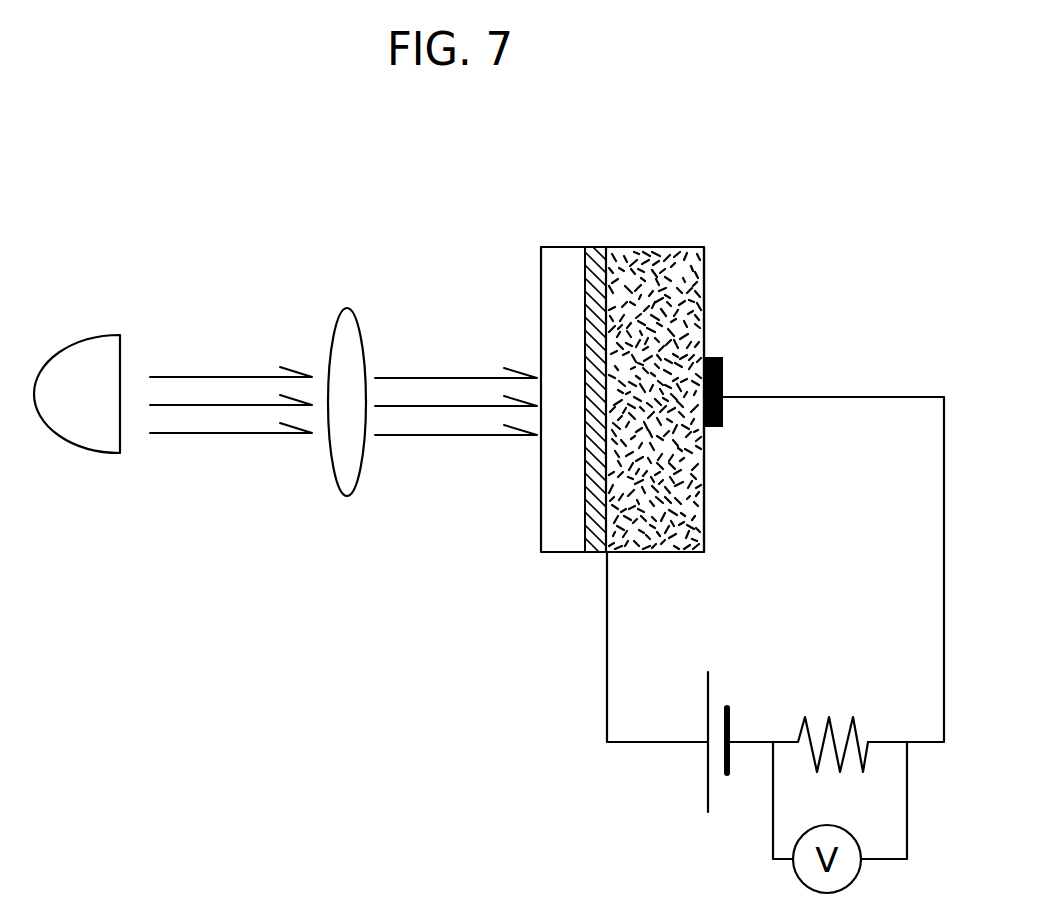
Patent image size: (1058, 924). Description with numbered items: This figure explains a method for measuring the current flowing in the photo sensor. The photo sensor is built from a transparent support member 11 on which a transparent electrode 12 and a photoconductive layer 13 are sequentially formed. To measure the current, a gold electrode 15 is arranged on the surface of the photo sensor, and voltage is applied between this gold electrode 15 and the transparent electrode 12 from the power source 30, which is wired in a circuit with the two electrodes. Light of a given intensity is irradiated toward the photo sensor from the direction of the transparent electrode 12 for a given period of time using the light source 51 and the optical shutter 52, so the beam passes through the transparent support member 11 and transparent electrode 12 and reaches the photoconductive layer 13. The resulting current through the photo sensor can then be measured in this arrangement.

The transparent support member 11 is at (562, 288).
The transparent electrode 12 is at (594, 262).
The photoconductive layer 13 is at (698, 290).
The gold electrode 15 is at (726, 367).
The power source 30 is at (687, 742).
The light source 51 is at (80, 365).
The optical shutter 52 is at (347, 380).